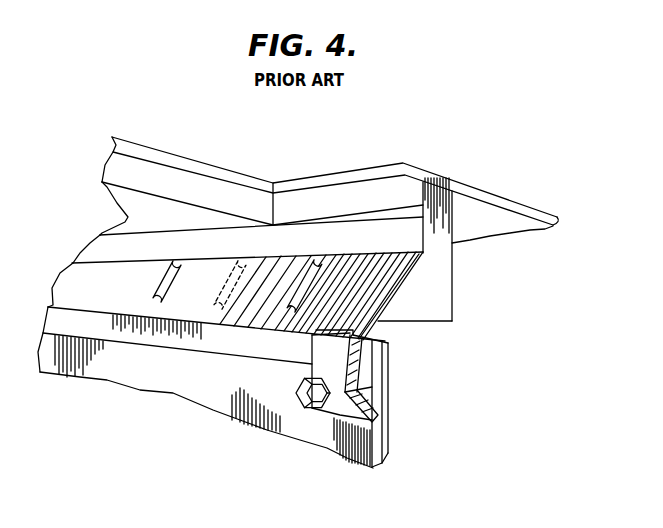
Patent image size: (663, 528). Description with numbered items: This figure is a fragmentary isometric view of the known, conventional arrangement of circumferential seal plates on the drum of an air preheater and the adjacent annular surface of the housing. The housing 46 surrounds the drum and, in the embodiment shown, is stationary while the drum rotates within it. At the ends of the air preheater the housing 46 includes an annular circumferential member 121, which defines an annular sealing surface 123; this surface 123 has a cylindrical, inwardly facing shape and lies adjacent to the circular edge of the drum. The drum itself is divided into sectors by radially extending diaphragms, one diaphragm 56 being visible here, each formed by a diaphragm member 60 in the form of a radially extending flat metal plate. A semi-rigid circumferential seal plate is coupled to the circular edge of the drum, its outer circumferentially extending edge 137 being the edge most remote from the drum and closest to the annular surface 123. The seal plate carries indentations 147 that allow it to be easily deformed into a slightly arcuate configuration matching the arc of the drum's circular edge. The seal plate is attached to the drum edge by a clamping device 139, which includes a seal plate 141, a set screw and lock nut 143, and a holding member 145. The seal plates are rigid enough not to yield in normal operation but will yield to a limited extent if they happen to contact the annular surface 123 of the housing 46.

The housing 46 is at (226, 170).
The diaphragm 56 is at (396, 360).
The diaphragm member 60 is at (197, 387).
The annular circumferential member 121 is at (440, 281).
The annular sealing surface 123 is at (403, 240).
The outer circumferentially extending edge 137 is at (178, 272).
The clamping device 139 is at (307, 424).
The seal plate 141 is at (334, 352).
The set screw and lock nut 143 is at (299, 394).
The holding member 145 is at (169, 342).
The indentation 147 is at (320, 258).